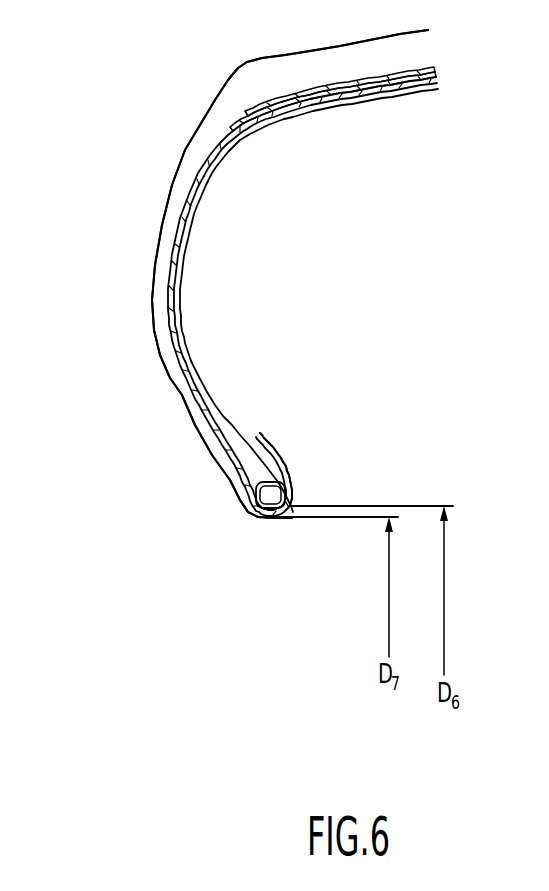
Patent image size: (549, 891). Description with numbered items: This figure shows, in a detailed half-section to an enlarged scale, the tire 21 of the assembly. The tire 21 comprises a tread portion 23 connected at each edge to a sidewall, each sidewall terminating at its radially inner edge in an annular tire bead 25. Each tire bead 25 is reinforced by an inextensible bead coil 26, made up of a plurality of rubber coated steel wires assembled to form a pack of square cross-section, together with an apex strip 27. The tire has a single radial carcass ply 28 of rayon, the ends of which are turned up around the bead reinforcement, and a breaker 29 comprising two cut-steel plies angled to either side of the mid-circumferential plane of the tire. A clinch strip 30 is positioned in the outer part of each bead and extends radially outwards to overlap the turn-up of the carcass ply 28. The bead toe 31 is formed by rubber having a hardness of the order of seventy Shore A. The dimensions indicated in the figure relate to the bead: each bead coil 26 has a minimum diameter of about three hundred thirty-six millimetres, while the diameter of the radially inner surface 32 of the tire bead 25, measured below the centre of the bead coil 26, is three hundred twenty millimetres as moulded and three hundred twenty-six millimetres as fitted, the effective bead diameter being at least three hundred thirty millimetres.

The tire 21 is at (148, 137).
The tread portion 23 is at (320, 53).
The tire bead 25 is at (280, 467).
The bead coil 26 is at (268, 495).
The apex strip 27 is at (252, 457).
The radial carcass ply 28 is at (180, 232).
The breaker 29 is at (385, 70).
The clinch strip 30 is at (182, 378).
The bead toe 31 is at (297, 520).
The radially inner surface 32 is at (265, 518).